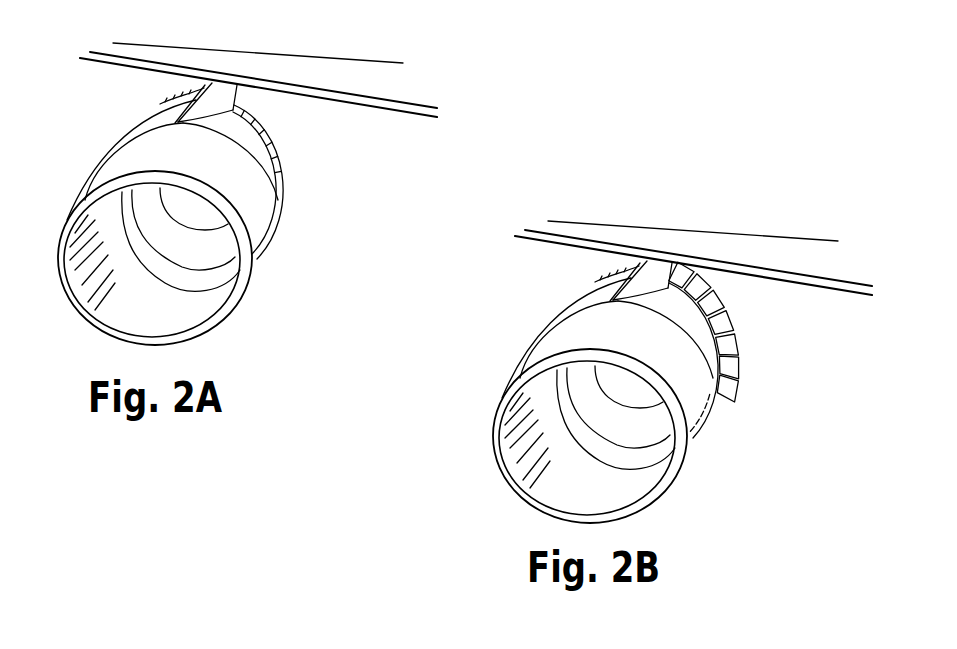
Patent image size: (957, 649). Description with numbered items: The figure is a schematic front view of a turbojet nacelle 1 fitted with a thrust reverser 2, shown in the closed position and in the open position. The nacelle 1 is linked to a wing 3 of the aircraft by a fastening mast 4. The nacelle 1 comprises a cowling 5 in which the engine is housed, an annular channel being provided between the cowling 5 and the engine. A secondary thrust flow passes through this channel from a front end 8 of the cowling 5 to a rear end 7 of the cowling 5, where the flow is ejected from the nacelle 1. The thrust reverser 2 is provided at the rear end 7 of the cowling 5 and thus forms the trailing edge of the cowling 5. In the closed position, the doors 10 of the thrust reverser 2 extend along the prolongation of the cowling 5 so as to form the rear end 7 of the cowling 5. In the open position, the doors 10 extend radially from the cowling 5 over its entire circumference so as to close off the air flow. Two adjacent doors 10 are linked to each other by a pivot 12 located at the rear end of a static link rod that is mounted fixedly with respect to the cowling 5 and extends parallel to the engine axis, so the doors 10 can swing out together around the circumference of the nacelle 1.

In FIG. 2A, the nacelle 1 is at (64, 201).
In FIG. 2B, the nacelle 1 is at (469, 385).
In FIG. 2B, the thrust reverser 2 is at (552, 276).
In FIG. 2A, the wing 3 is at (357, 77).
In FIG. 2B, the wing 3 is at (693, 234).
In FIG. 2A, the fastening mast 4 is at (219, 93).
In FIG. 2A, the cowling 5 is at (247, 202).
In FIG. 2B, the cowling 5 is at (625, 366).
In FIG. 2A, the rear end of the cowling 7 is at (158, 101).
In FIG. 2A, the front end of the cowling 8 is at (202, 307).
In FIG. 2B, the front end of the cowling 8 is at (590, 436).
In FIG. 2B, the doors 10 is at (735, 347).
In FIG. 2A, the pivot 12 is at (270, 137).